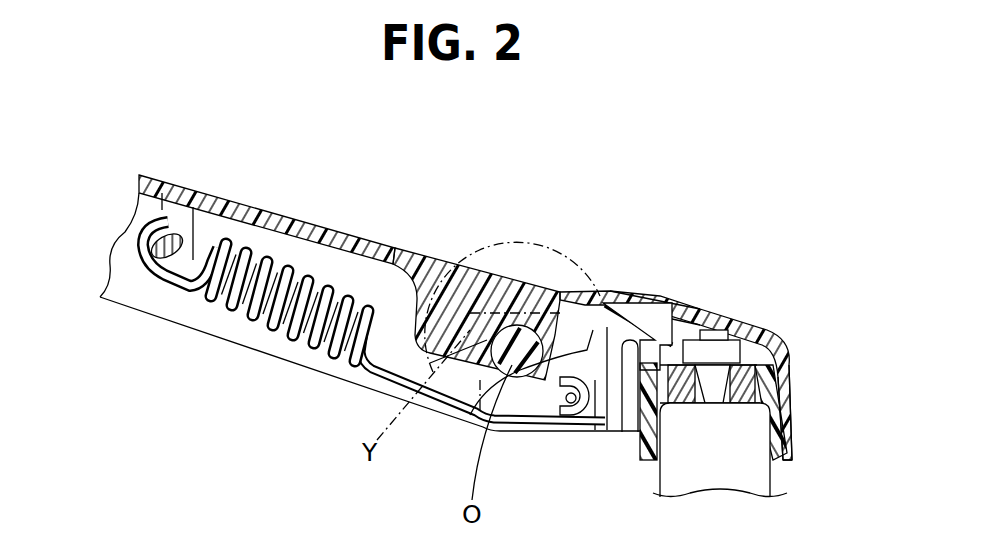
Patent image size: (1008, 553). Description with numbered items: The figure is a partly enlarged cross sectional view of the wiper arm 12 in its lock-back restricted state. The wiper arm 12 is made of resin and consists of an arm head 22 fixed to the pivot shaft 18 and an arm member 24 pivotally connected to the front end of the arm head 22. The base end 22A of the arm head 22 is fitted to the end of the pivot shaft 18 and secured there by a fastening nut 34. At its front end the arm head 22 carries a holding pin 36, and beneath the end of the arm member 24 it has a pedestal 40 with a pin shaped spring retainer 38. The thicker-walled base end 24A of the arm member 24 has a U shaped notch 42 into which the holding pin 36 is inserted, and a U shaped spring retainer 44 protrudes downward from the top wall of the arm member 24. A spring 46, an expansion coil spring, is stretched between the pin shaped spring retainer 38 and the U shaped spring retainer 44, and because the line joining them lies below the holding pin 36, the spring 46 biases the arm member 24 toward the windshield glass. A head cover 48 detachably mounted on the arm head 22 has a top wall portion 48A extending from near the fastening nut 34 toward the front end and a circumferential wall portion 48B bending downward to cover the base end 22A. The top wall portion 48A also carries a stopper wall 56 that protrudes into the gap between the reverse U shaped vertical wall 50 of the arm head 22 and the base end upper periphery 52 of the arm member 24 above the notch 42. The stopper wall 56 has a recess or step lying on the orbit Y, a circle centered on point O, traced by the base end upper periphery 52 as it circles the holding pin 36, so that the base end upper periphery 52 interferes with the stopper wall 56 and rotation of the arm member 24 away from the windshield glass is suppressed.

The wiper arm 12 is at (673, 206).
The pivot shaft 18 is at (710, 332).
The arm head 22 is at (622, 435).
The base end 22A is at (773, 397).
The arm member 24 is at (378, 240).
The base end 24A is at (463, 272).
The fastening nut 34 is at (745, 340).
The holding pin 36 is at (432, 363).
The pin shaped spring retainer 38 is at (553, 405).
The pedestal 40 is at (592, 425).
The U shaped notch 42 is at (545, 335).
The U shaped spring retainer 44 is at (157, 265).
The spring 46 is at (290, 333).
The head cover 48 is at (792, 350).
The top wall portion 48A is at (657, 298).
The circumferential wall portion 48B is at (795, 430).
The reverse U shaped vertical wall 50 is at (622, 322).
The base end upper periphery 52 is at (590, 333).
The stopper wall 56 is at (515, 382).